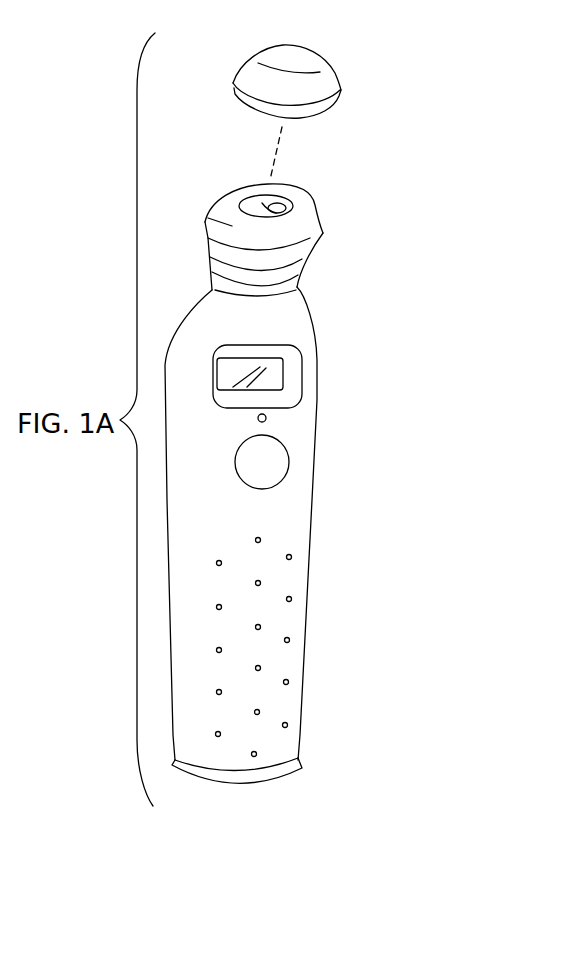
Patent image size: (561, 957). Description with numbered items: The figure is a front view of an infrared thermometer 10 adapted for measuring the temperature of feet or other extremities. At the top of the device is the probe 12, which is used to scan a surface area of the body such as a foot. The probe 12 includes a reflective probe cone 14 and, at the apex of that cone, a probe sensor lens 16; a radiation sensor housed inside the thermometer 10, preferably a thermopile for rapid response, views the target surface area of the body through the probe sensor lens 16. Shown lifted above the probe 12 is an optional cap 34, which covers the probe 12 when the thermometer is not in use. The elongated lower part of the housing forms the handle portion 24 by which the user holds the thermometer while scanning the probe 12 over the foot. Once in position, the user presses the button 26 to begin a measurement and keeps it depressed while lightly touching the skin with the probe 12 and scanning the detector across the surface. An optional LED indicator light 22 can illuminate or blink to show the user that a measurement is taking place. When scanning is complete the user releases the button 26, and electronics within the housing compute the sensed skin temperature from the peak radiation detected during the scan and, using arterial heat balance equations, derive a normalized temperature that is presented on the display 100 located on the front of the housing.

The thermometer 10 is at (443, 153).
The probe 12 is at (292, 232).
The reflective probe cone 14 is at (268, 193).
The probe sensor lens 16 is at (278, 207).
The LED indicator light 22 is at (267, 418).
The handle portion 24 is at (311, 614).
The button 26 is at (276, 462).
The cap 34 is at (330, 86).
The display 100 is at (270, 376).